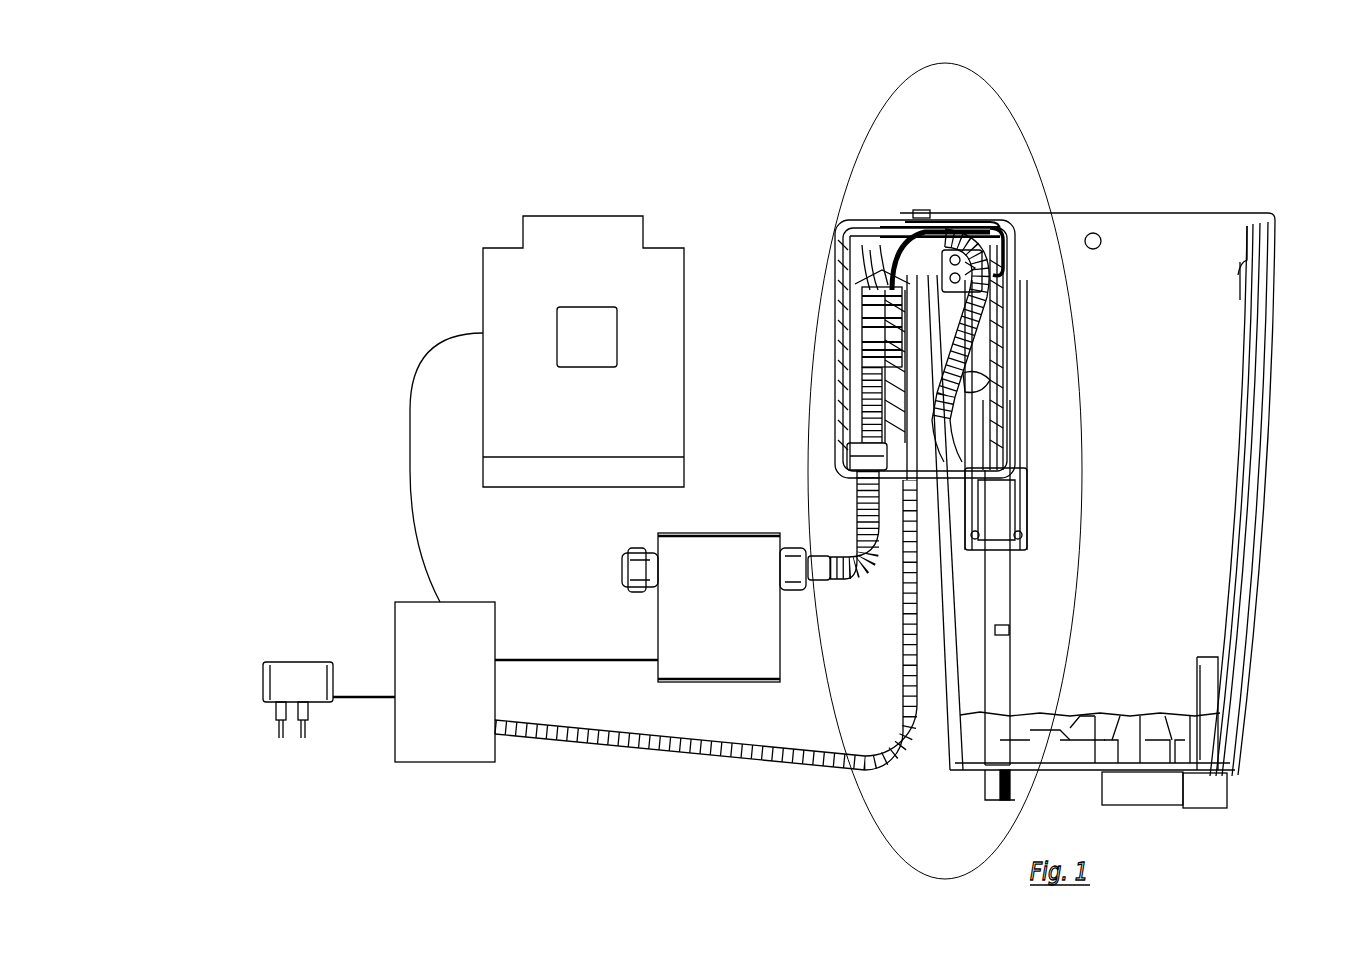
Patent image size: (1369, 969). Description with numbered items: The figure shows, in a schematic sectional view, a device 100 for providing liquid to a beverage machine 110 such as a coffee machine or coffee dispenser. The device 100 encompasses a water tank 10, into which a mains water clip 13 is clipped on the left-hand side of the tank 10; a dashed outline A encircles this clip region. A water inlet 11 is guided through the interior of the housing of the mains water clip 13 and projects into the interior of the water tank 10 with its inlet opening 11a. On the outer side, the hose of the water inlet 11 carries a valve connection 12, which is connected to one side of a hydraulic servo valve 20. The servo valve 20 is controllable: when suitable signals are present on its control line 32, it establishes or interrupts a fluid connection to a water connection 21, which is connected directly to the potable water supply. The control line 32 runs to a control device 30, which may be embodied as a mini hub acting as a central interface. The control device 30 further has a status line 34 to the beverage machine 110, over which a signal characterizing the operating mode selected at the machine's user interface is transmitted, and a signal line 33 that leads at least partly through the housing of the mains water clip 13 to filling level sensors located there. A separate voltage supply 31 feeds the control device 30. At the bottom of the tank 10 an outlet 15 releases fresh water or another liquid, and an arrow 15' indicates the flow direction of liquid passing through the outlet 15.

The device for providing liquid 100 is at (976, 147).
The mains water clip 13 is at (960, 220).
The water inlet 11 is at (963, 335).
The inlet opening 11a is at (942, 413).
The water tank 10 is at (1198, 540).
The valve connection 12 is at (800, 578).
The hydraulic servo valve 20 is at (727, 567).
The water connection 21 is at (622, 568).
The beverage machine 110 is at (495, 299).
The status line 34 is at (405, 488).
The control device 30 is at (425, 733).
The voltage supply 31 is at (280, 672).
The control line 32 is at (598, 660).
The signal line 33 is at (775, 770).
The outlet 15 is at (1199, 834).
The arrow 15' is at (1156, 837).
The detail region A is at (855, 147).